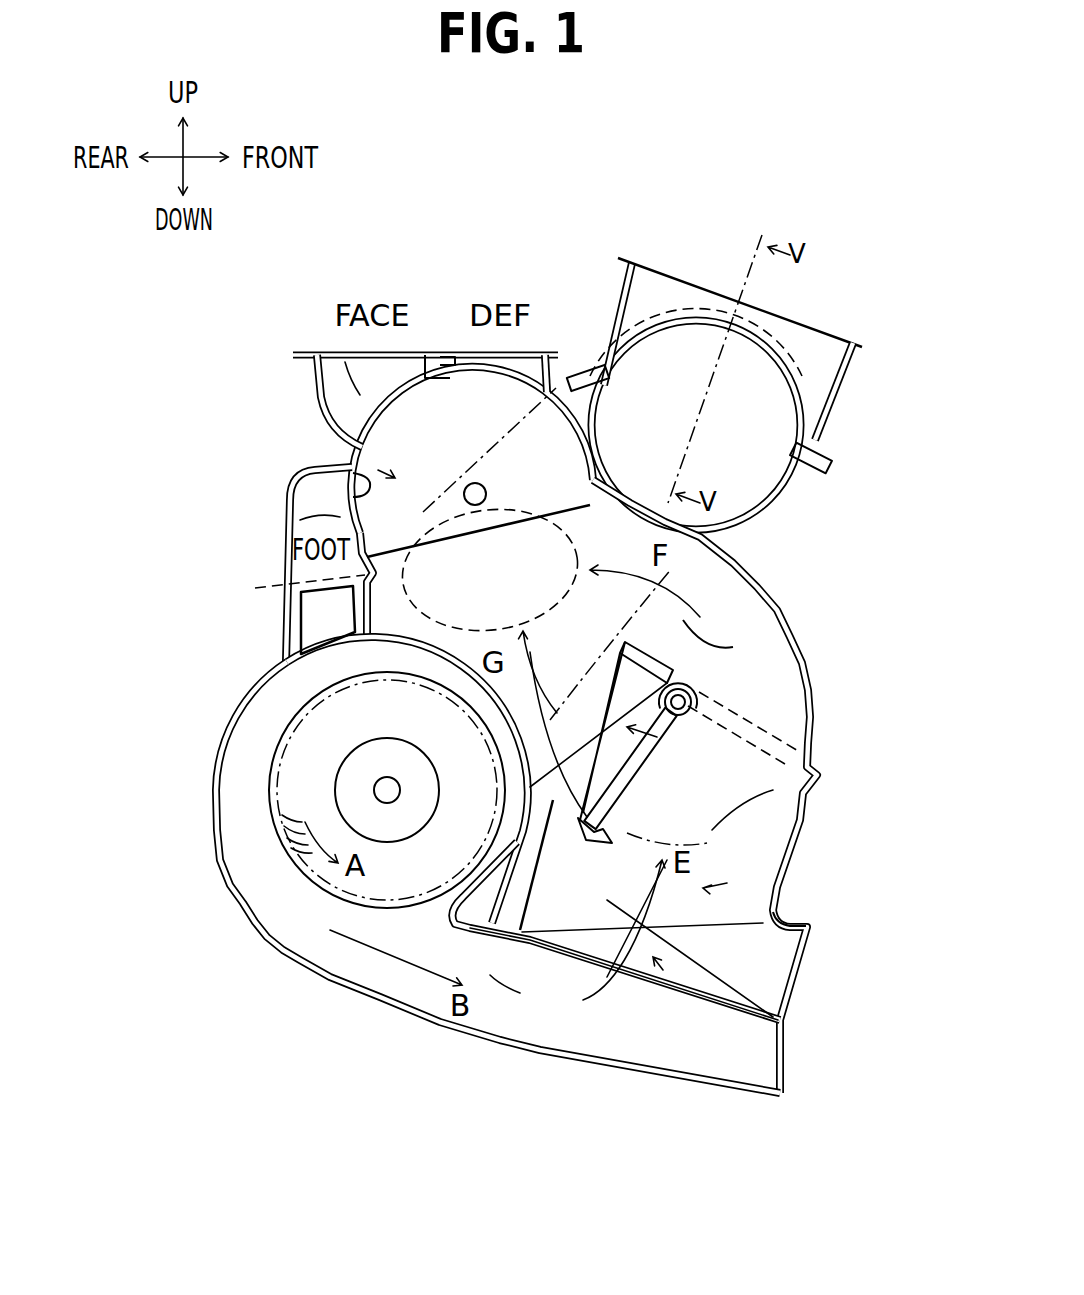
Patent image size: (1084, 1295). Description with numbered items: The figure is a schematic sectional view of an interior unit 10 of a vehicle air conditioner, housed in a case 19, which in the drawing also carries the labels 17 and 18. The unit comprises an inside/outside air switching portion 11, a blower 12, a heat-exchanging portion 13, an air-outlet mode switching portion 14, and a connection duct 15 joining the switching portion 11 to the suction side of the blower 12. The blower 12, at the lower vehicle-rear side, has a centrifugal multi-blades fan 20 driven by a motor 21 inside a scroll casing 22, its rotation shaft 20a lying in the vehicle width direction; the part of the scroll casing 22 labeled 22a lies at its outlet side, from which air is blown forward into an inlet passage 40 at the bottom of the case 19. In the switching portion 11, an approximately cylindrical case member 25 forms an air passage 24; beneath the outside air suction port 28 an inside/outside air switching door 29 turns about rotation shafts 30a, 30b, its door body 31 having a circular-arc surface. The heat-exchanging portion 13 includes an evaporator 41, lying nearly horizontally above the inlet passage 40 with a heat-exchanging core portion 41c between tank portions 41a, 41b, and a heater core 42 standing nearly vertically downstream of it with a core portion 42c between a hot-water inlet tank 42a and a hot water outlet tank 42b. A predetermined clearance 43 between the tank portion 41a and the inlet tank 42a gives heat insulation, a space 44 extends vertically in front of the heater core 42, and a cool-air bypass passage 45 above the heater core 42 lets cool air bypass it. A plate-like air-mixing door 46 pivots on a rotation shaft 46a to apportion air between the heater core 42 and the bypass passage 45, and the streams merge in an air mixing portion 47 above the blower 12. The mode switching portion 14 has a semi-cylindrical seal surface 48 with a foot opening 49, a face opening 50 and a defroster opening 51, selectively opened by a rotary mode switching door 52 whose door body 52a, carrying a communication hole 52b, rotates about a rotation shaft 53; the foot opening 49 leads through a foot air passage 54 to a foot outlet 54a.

The interior unit 10 is at (733, 786).
The inside/outside air switching portion 11 is at (753, 438).
The blower 12 is at (455, 885).
The heat-exchanging portion 13 is at (802, 882).
The air-outlet mode switching portion 14 is at (350, 465).
The connection duct 15 is at (700, 572).
The foot duct 17 is at (498, 877).
The foot duct 18 is at (373, 1002).
The case 19 is at (498, 879).
The centrifugal multi-blades fan 20 is at (318, 854).
The rotation shaft 20a is at (380, 775).
The motor 21 is at (336, 786).
The scroll casing 22 is at (458, 885).
The scroll casing outlet 22a is at (507, 930).
The air passage 24 is at (726, 438).
The case member 25 is at (738, 492).
The outside air suction port 28 is at (697, 318).
The inside/outside air switching door 29 is at (662, 310).
The rotation shaft 30a is at (580, 372).
The rotation shaft 30b is at (828, 452).
The door body 31 is at (790, 362).
The inlet passage 40 is at (645, 1043).
The evaporator 41 is at (690, 977).
The tank portion 41a is at (548, 830).
The tank portion 41b is at (770, 980).
The heat-exchanging core portion 41c is at (700, 1000).
The heater core 42 is at (613, 800).
The hot-water inlet tank 42a is at (618, 834).
The hot water outlet tank 42b is at (662, 668).
The heat-exchanging core portion 42c is at (738, 822).
The predetermined clearance 43 is at (520, 993).
The space 44 is at (712, 830).
The cool-air bypass passage 45 is at (705, 625).
The air-mixing door 46 is at (675, 718).
The rotation shaft 46a is at (697, 690).
The air mixing portion 47 is at (288, 585).
The semi-cylindrical seal surface 48 is at (352, 448).
The foot opening 49 is at (300, 520).
The face opening 50 is at (383, 392).
The defroster opening 51 is at (512, 362).
The mode switching door 52 is at (403, 427).
The door body 52a is at (352, 500).
The communication hole 52b is at (358, 362).
The rotation shaft 53 is at (477, 483).
The foot air passage 54 is at (323, 573).
The foot outlet 54a is at (296, 618).